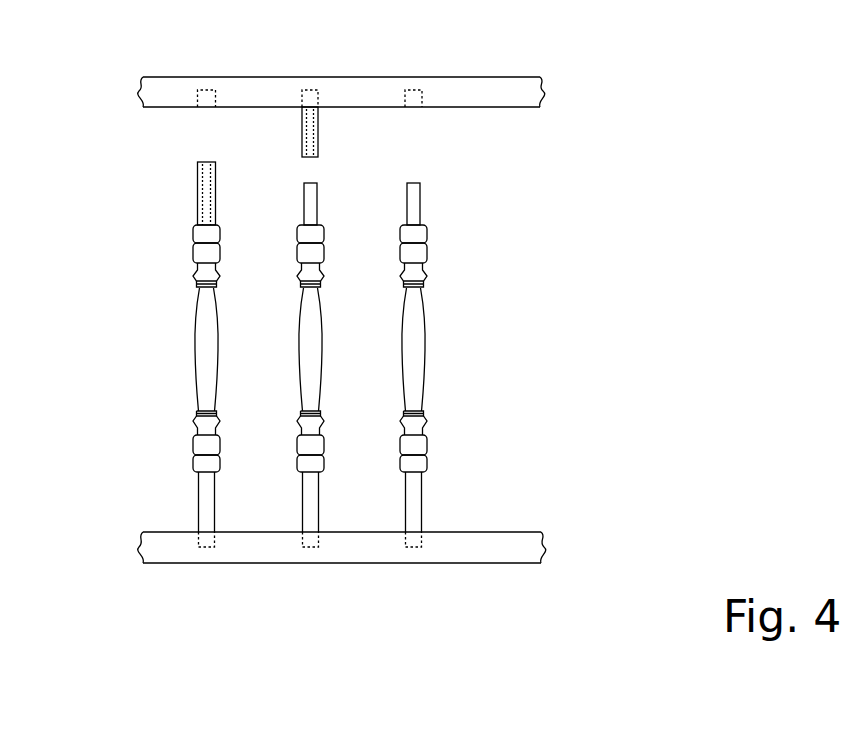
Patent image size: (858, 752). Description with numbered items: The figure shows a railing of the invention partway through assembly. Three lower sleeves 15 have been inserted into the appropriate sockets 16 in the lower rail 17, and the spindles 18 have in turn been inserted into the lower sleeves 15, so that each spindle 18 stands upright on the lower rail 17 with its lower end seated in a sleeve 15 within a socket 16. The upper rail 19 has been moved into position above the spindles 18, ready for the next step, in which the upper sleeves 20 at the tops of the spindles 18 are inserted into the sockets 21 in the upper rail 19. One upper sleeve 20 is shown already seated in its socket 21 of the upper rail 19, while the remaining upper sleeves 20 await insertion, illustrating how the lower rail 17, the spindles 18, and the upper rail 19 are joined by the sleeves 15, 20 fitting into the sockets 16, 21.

The lower sleeve 15 is at (208, 500).
The socket 16 is at (215, 547).
The lower rail 17 is at (517, 547).
The spindle 18 is at (207, 387).
The upper rail 19 is at (505, 97).
The upper sleeve 20 is at (317, 132).
The socket 21 is at (208, 90).